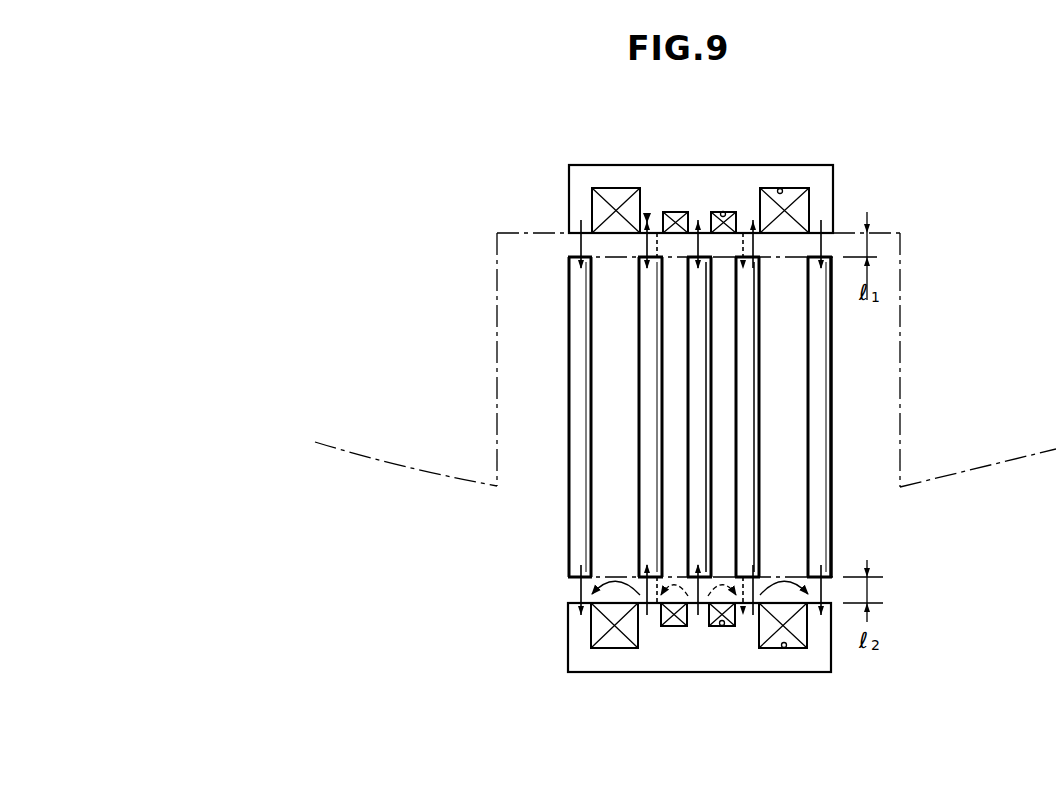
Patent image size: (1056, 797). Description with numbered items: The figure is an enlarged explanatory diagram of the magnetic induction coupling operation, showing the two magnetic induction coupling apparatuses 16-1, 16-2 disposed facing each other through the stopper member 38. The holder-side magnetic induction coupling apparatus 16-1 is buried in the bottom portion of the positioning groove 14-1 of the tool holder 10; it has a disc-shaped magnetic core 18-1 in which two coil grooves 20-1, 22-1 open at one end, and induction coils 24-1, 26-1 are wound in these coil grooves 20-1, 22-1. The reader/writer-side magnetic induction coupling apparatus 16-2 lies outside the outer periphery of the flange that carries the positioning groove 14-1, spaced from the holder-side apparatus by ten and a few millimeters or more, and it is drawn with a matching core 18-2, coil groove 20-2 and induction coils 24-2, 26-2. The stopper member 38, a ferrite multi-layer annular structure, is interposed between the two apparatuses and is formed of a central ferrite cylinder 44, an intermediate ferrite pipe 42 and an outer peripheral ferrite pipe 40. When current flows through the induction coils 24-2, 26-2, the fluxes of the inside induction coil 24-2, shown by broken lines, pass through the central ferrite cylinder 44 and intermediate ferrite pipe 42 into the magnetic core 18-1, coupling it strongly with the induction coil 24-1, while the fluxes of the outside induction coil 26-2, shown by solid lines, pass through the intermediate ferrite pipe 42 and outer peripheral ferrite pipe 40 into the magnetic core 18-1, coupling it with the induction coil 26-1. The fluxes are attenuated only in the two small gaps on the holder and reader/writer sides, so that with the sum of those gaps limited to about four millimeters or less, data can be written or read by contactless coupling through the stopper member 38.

The tool holder 10 is at (442, 343).
The positioning groove 14-1 is at (497, 486).
The magnetic induction coupling apparatus 16-1 is at (893, 131).
The magnetic induction coupling apparatus 16-2 is at (826, 687).
The magnetic core 18-1 is at (686, 182).
The second block body 18-2 is at (709, 662).
The coil groove 20-1 is at (724, 211).
The second small guide element 20-2 is at (726, 626).
The coil groove 22-1 is at (780, 190).
The induction coil 24-1 is at (675, 211).
The induction coil 24-2 is at (672, 626).
The induction coil 26-1 is at (610, 195).
The induction coil 26-2 is at (613, 646).
The stopper member 38 is at (555, 425).
The outer peripheral ferrite pipe 40 is at (820, 482).
The intermediate ferrite pipe 42 is at (757, 410).
The central ferrite cylinder 44 is at (702, 337).